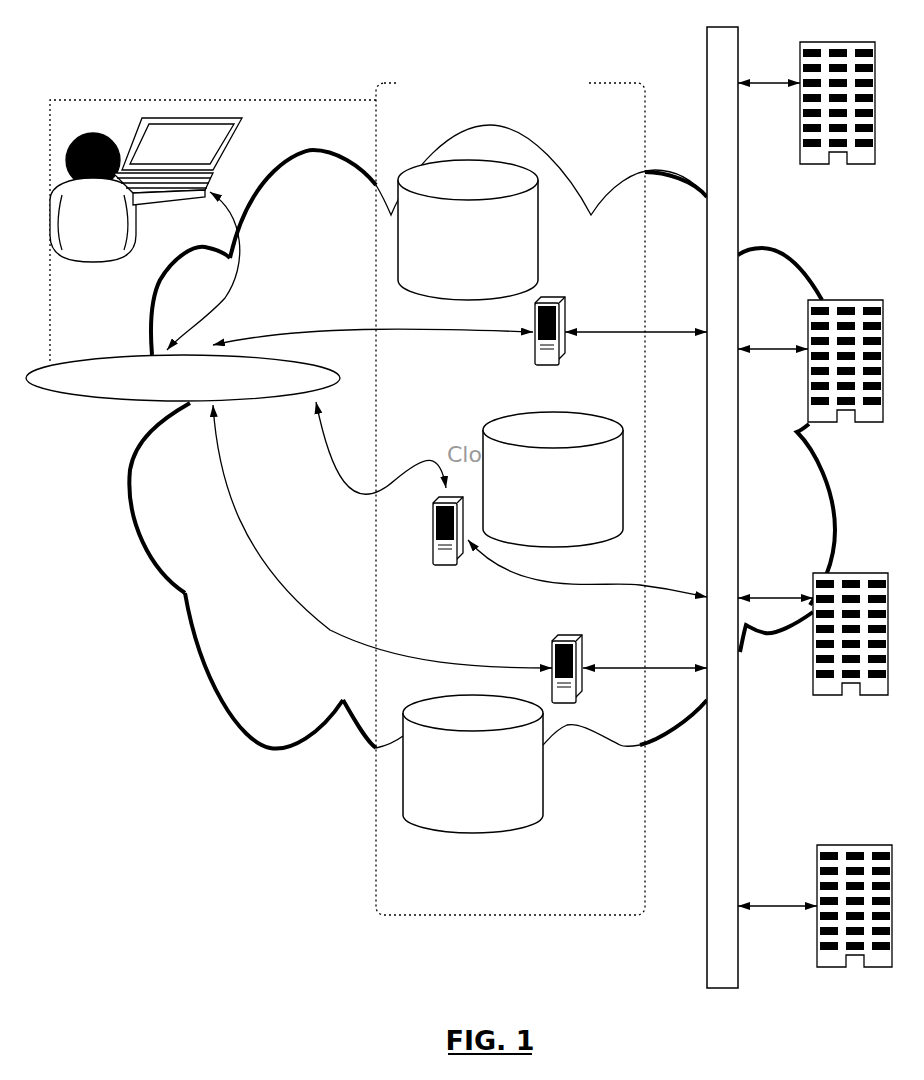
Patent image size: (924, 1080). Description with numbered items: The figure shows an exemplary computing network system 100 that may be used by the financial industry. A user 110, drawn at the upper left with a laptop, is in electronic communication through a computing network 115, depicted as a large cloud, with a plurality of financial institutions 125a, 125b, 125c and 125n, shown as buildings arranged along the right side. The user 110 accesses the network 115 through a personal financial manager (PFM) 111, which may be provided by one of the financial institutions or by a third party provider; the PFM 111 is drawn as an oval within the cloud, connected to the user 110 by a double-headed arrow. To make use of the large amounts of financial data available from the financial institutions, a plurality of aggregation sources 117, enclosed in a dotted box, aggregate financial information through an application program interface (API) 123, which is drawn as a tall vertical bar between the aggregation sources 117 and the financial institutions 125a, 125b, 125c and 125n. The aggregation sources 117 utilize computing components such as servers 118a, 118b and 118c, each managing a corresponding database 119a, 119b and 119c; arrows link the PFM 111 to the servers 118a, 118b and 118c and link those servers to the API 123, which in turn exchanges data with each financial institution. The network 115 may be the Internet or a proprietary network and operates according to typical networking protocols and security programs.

The system 100 is at (290, 865).
The user 110 is at (113, 140).
The personal financial manager (PFM) 111 is at (70, 400).
The computing network 115 is at (320, 718).
The aggregation sources 117 is at (577, 122).
The server 118a is at (548, 343).
The server 118b is at (423, 531).
The server 118c is at (568, 681).
The database 119a is at (468, 243).
The database 119b is at (553, 493).
The database 119c is at (473, 778).
The application program interface (API) 123 is at (718, 72).
The financial institution 125a is at (837, 115).
The financial institution 125b is at (845, 373).
The financial institution 125c is at (850, 646).
The financial institution 125n is at (854, 918).